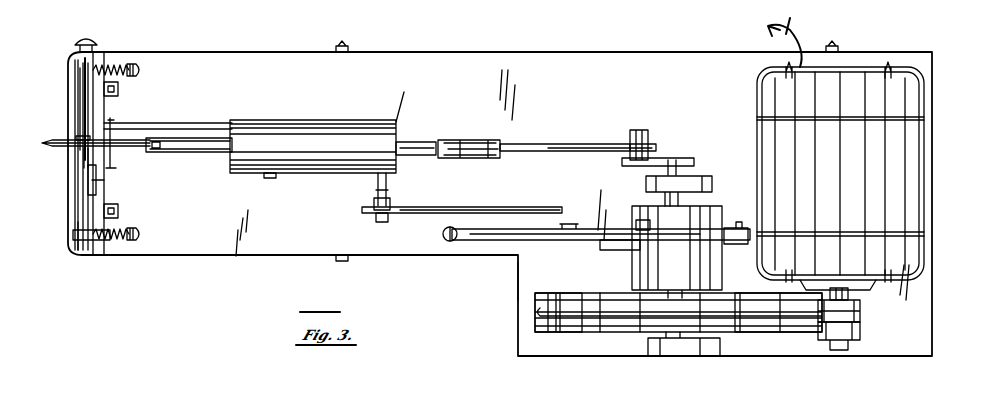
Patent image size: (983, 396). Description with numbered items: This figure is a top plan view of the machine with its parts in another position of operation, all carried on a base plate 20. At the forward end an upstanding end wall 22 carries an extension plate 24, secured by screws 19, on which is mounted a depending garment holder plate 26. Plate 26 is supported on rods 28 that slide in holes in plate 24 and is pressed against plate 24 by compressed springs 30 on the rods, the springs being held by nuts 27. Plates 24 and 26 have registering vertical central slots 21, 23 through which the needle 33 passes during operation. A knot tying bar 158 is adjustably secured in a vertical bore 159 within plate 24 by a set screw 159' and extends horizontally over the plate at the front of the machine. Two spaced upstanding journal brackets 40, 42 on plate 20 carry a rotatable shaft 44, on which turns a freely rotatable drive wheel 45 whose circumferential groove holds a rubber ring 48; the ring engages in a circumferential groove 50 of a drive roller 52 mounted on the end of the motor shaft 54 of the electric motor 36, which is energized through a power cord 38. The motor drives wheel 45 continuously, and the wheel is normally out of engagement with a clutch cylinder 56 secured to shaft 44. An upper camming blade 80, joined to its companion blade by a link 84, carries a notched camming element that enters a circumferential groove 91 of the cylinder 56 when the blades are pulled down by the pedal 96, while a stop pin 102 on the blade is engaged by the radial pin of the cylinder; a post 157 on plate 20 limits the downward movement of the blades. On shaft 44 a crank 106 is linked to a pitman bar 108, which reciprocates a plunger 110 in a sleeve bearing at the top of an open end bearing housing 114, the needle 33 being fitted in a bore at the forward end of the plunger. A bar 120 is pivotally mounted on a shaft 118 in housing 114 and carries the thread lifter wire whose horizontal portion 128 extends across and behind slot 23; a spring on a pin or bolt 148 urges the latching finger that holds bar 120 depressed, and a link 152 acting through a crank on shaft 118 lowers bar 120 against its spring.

The base plate 20 is at (270, 255).
The garment holder plate 26 is at (78, 99).
The set screw 159' is at (64, 30).
The vertical bore 159 is at (50, 105).
The knot tying bar 158 is at (80, 82).
The vertical central slot 23 is at (76, 138).
The needle 33 is at (56, 148).
The vertical central slot 21 is at (86, 160).
The upstanding end wall 22 is at (100, 212).
The extension plate 24 is at (80, 252).
The compressed springs 30 is at (112, 242).
The nuts 27 is at (131, 66).
The rods 28 is at (118, 242).
The screws 19 is at (120, 90).
The bar 120 is at (190, 128).
The horizontal portion 128 is at (114, 160).
The bearing housing 114 is at (316, 140).
The pin or bolt 148 is at (268, 180).
The shaft 118 is at (378, 188).
The link 152 is at (538, 208).
The plunger 110 is at (436, 124).
The pitman bar 108 is at (578, 146).
The crank 106 is at (660, 158).
The journal bracket 42 is at (688, 178).
The clutch cylinder 56 is at (644, 216).
The stop pin 102 is at (646, 230).
The link 84 is at (736, 226).
The upper camming blade 80 is at (490, 242).
The pedal 96 is at (446, 244).
The post 157 is at (518, 284).
The circumferential groove 91 is at (630, 252).
The electric motor 36 is at (896, 160).
The power cord 38 is at (800, 34).
The rubber ring 48 is at (612, 314).
The drive wheel 45 is at (560, 330).
The rotatable shaft 44 is at (716, 336).
The journal bracket 40 is at (668, 350).
The motor shaft 54 is at (850, 294).
The circumferential groove 50 is at (856, 320).
The drive roller 52 is at (830, 328).